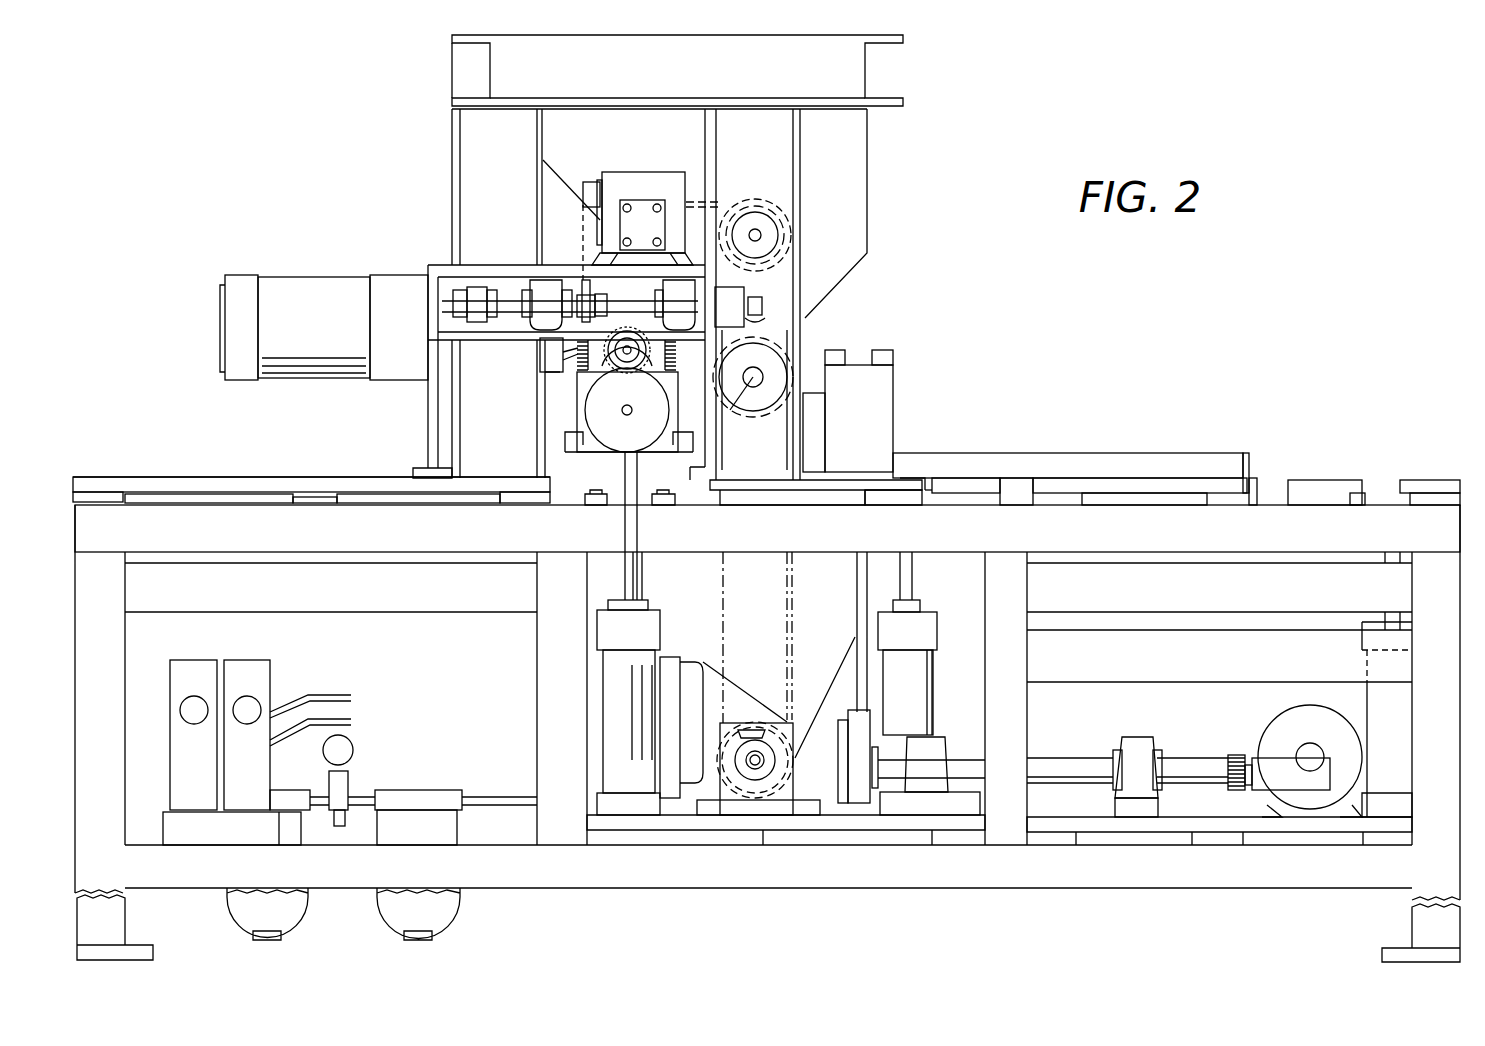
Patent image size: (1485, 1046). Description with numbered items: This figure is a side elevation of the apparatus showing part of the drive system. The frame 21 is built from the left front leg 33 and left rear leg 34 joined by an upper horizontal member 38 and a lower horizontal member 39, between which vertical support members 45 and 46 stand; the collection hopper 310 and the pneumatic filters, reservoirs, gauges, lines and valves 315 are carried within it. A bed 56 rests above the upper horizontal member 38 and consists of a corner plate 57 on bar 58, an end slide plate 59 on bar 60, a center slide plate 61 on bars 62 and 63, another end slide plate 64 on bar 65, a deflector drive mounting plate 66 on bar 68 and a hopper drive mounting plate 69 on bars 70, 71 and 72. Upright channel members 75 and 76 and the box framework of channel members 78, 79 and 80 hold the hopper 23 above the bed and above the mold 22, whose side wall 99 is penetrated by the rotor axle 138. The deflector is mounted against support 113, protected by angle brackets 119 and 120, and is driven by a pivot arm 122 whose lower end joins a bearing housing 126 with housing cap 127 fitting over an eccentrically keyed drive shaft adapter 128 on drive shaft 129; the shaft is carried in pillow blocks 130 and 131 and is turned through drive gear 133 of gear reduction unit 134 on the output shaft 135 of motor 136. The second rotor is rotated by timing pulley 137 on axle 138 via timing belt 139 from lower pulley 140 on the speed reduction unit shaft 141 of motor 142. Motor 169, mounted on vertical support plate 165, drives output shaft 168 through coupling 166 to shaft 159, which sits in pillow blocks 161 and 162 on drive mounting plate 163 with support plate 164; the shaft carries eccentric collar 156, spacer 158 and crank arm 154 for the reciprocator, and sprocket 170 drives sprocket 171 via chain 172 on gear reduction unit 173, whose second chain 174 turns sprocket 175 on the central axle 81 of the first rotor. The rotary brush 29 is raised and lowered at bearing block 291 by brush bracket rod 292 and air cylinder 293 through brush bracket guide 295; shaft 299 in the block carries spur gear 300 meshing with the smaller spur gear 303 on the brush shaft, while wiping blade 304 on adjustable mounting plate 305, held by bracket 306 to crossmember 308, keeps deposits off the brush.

The frame 21 is at (1272, 893).
The mold 22 is at (1065, 452).
The hopper 23 is at (867, 165).
The rotary brush 29 is at (633, 408).
The left front leg 33 is at (1412, 930).
The left rear leg 34 is at (125, 920).
The upper horizontal member 38 is at (252, 548).
The lower horizontal member 39 is at (702, 888).
The vertical support member 45 is at (537, 665).
The vertical support member 46 is at (1017, 665).
The bed 56 is at (200, 464).
The corner plate 57 is at (1420, 480).
The bar 58 is at (1436, 495).
The end slide plate 59 is at (1325, 478).
The bar 60 is at (1366, 492).
The center slide plate 61 is at (1250, 478).
The bar 62 is at (1258, 488).
The bar 63 is at (1072, 500).
The end slide plate 64 is at (1010, 490).
The bar 65 is at (966, 494).
The deflector drive mounting plate 66 is at (742, 500).
The bar 68 is at (870, 505).
The hopper drive mounting plate 69 is at (428, 485).
The bar 70 is at (512, 500).
The bar 71 is at (314, 500).
The bar 72 is at (102, 500).
The upright channel member 75 is at (480, 157).
The upright channel member 76 is at (790, 148).
The channel member 78 is at (880, 78).
The channel member 79 is at (668, 96).
The channel member 80 is at (488, 76).
The central axle 81 is at (761, 235).
The side wall 99 is at (652, 152).
The support 113 is at (880, 418).
The angle bracket 119 is at (893, 357).
The angle bracket 120 is at (845, 352).
The pivot arm 122 is at (856, 636).
The bearing housing 126 is at (872, 710).
The housing cap 127 is at (838, 745).
The drive shaft adapter 128 is at (878, 750).
The drive shaft 129 is at (888, 772).
The pillow block 130 is at (940, 740).
The pillow block 131 is at (1142, 740).
The drive gear 133 is at (1233, 785).
The gear reduction unit 134 is at (1272, 765).
The output shaft 135 is at (1316, 750).
The motor 136 is at (1315, 718).
The timing pulley 137 is at (780, 360).
The rotor axle 138 is at (740, 405).
The timing belt 139 is at (787, 648).
The lower pulley 140 is at (743, 724).
The speed reduction unit shaft 141 is at (762, 765).
The motor 142 is at (670, 660).
The crank arm 154 is at (793, 312).
The eccentric collar 156 is at (730, 292).
The spacer 158 is at (771, 325).
The output shaft 159 is at (600, 296).
The pillow block 161 is at (665, 287).
The pillow block 162 is at (536, 318).
The drive mounting plate 163 is at (535, 290).
The vertical support plate 164 is at (708, 460).
The vertical support plate 165 is at (428, 436).
The coupling 166 is at (475, 300).
The output shaft 168 is at (455, 300).
The motor 169 is at (313, 270).
The sprocket 170 is at (580, 300).
The sprocket 171 is at (592, 180).
The chain 172 is at (583, 258).
The gear reduction unit 173 is at (616, 197).
The second chain 174 is at (722, 215).
The sprocket 175 is at (772, 230).
The bearing block 291 is at (565, 440).
The adjustable brush bracket rod 292 is at (638, 490).
The air cylinder 293 is at (655, 627).
The brush bracket guide 295 is at (598, 505).
The shaft 299 is at (600, 400).
The spur gear 300 is at (672, 442).
The spur gear 303 is at (627, 362).
The wiping blade 304 is at (577, 395).
The adjustable mounting plate 305 is at (552, 364).
The bracket 306 is at (540, 347).
The crossmember 308 is at (438, 330).
The collection hopper 310 is at (648, 590).
The pneumatic components 315 is at (388, 746).